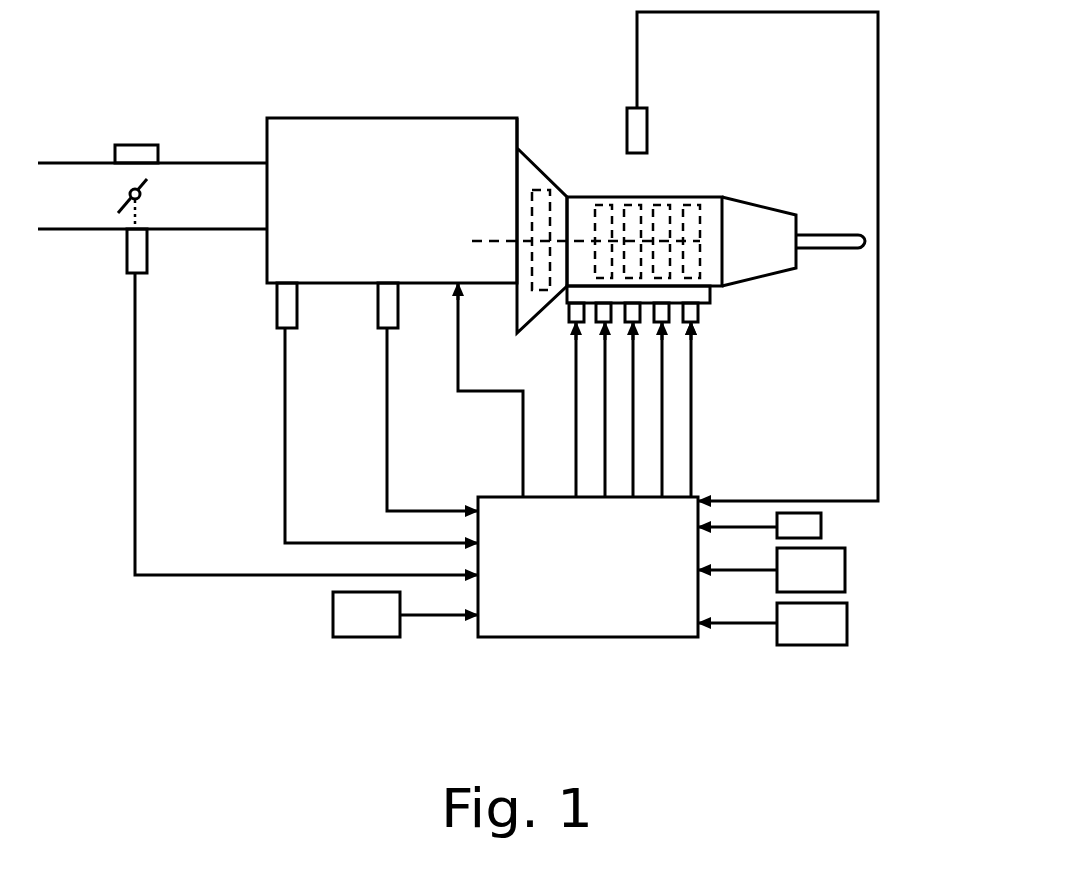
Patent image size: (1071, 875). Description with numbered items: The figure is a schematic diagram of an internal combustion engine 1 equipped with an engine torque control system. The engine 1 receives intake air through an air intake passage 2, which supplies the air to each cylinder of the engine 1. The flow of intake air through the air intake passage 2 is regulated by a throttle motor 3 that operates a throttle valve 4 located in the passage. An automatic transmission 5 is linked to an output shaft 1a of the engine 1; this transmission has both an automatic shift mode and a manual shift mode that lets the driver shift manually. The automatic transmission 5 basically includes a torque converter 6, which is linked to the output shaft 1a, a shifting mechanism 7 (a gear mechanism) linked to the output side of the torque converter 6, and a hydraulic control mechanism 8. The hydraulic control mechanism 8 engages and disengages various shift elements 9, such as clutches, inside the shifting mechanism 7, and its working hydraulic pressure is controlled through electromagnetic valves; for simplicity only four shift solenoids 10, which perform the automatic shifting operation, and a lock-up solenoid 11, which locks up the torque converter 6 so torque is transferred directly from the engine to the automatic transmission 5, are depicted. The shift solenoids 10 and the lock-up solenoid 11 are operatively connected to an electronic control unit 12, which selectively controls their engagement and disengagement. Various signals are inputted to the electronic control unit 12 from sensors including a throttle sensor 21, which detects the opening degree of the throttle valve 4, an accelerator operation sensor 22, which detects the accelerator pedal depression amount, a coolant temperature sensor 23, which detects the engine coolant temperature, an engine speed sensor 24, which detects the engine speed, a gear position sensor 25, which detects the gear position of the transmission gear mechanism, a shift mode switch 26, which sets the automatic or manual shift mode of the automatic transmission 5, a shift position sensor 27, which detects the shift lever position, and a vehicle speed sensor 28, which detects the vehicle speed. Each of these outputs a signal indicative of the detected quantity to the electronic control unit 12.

The internal combustion engine 1 is at (410, 118).
The output shaft 1a is at (494, 240).
The air intake passage 2 is at (207, 163).
The throttle motor 3 is at (160, 155).
The throttle valve 4 is at (118, 206).
The automatic transmission 5 is at (747, 121).
The torque converter 6 is at (542, 173).
The shifting mechanism 7 is at (722, 198).
The hydraulic control mechanism 8 is at (712, 300).
The shift elements 9 is at (664, 200).
The shift solenoids 10 is at (664, 324).
The lock-up solenoid 11 is at (570, 325).
The electronic control unit 12 is at (705, 496).
The throttle sensor 21 is at (147, 273).
The accelerator operation sensor 22 is at (333, 625).
The coolant temperature sensor 23 is at (297, 328).
The engine speed sensor 24 is at (398, 328).
The gear position sensor 25 is at (646, 124).
The shift mode switch 26 is at (822, 528).
The shift position sensor 27 is at (847, 578).
The vehicle speed sensor 28 is at (848, 627).